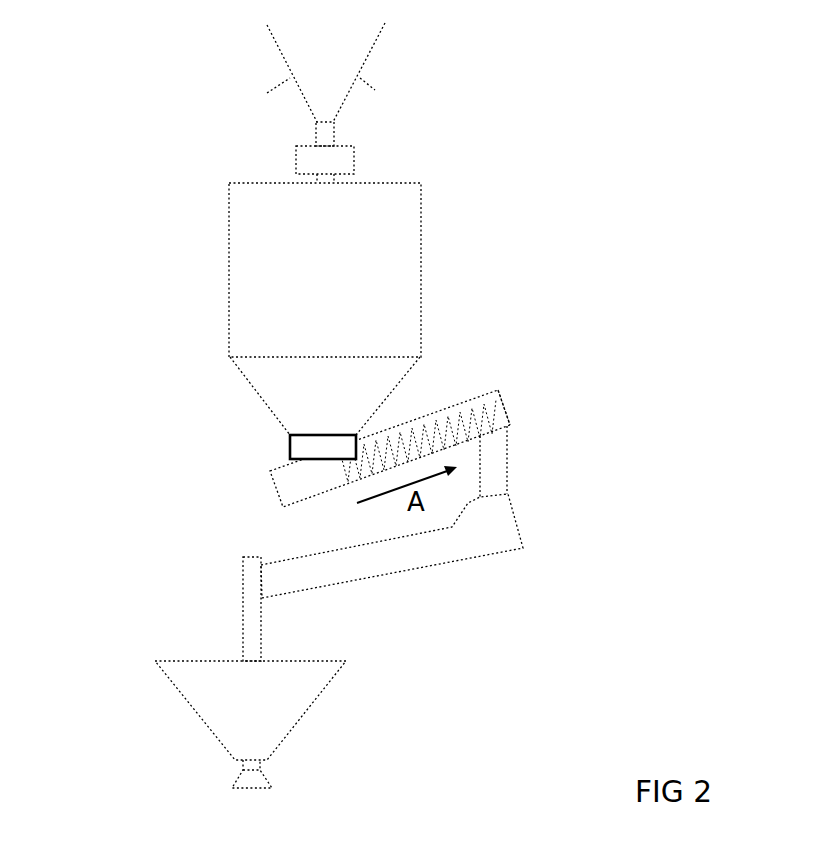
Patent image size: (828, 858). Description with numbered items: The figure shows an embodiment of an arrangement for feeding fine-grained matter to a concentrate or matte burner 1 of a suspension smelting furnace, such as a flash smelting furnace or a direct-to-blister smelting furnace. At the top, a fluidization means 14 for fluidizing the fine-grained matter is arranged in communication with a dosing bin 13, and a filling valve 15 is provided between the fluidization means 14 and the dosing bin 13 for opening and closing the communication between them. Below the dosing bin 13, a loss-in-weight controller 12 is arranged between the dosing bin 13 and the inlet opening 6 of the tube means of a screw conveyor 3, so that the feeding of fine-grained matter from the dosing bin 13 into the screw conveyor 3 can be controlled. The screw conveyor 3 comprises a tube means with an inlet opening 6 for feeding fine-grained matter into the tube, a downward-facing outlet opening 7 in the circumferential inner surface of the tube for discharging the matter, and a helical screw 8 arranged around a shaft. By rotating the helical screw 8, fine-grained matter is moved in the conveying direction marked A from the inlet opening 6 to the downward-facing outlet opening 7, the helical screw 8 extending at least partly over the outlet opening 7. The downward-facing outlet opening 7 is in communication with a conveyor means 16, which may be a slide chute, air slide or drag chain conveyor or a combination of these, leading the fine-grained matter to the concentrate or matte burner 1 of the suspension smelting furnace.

The concentrate or matte burner 1 is at (163, 718).
The screw conveyor 3 is at (439, 399).
The inlet opening 6 is at (288, 458).
The downward-facing outlet opening 7 is at (513, 428).
The helical screw 8 is at (488, 408).
The loss-in-weight controller 12 is at (290, 444).
The dosing bin 13 is at (229, 266).
The fluidization means 14 is at (283, 57).
The filling valve 15 is at (297, 158).
The conveyor means 16 is at (392, 573).